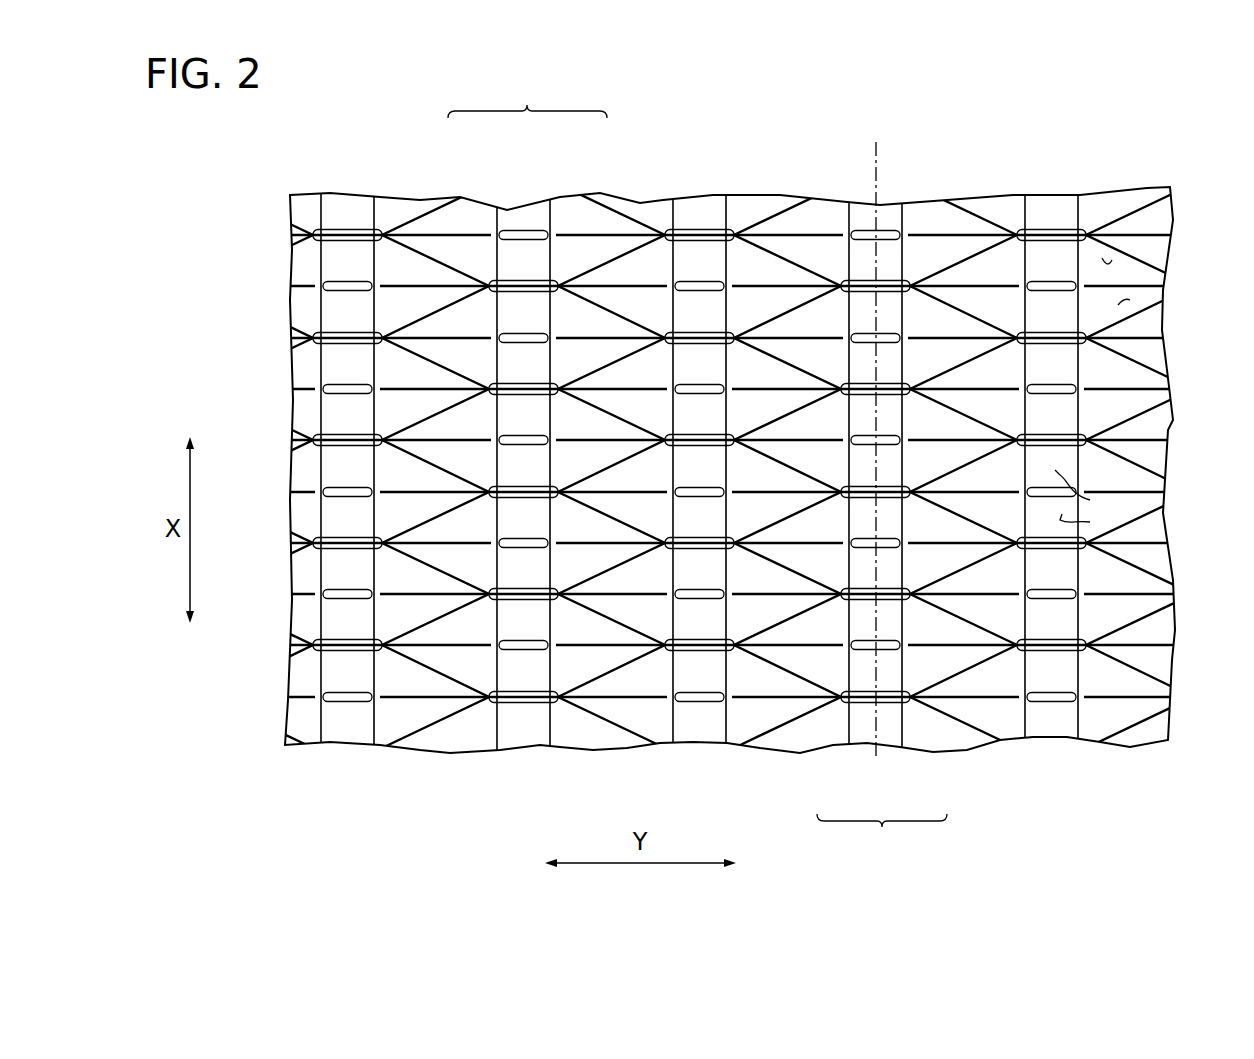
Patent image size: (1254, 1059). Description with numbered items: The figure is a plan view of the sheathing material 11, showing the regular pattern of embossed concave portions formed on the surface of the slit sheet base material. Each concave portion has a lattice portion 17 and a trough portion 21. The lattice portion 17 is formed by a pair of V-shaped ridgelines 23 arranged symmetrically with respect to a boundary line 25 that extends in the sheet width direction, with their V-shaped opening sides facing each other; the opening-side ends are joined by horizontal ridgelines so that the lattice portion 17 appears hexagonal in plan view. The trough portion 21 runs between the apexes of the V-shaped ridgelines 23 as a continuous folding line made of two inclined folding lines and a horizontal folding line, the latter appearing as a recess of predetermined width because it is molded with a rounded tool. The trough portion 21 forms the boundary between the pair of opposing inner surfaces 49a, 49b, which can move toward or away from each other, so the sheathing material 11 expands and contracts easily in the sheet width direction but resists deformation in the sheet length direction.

The sheathing material 11 is at (712, 152).
The lattice portion 17 is at (420, 305).
The trough portion 21 is at (697, 469).
The V-shaped ridgeline 23 is at (628, 239).
The boundary line 25 is at (877, 167).
The inner surface 49a is at (1112, 260).
The inner surface 49b is at (1118, 305).